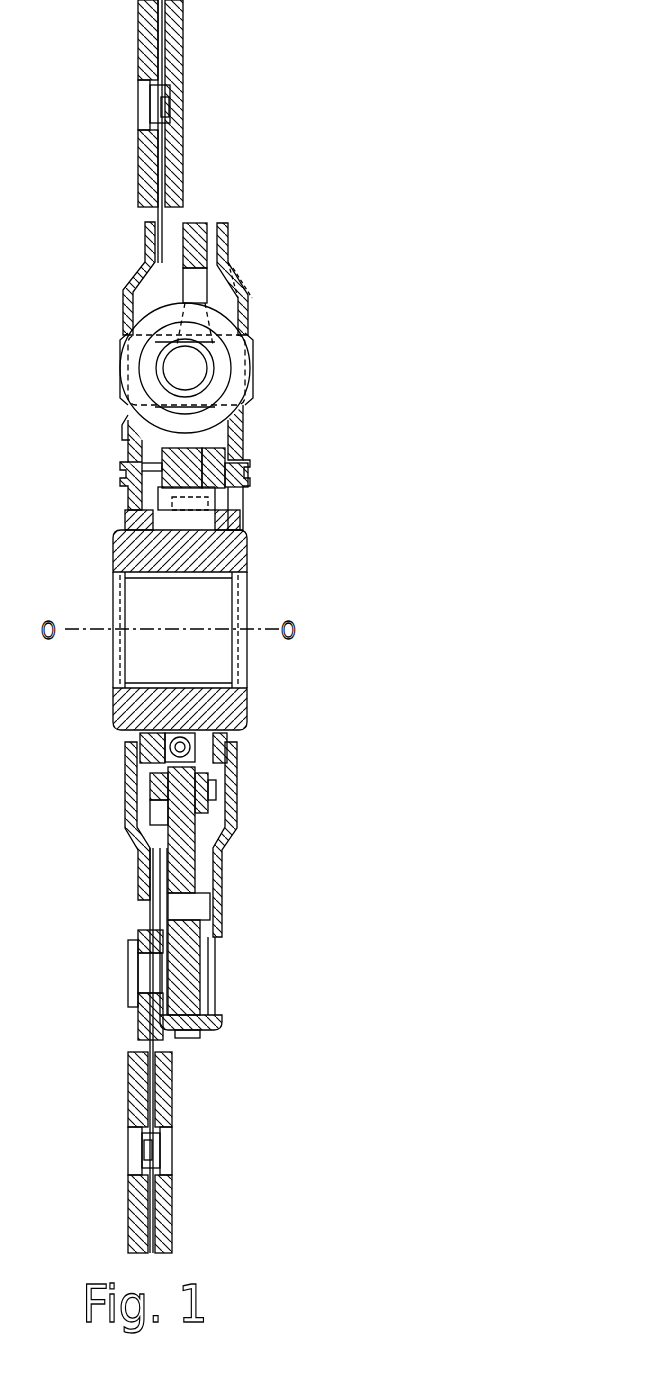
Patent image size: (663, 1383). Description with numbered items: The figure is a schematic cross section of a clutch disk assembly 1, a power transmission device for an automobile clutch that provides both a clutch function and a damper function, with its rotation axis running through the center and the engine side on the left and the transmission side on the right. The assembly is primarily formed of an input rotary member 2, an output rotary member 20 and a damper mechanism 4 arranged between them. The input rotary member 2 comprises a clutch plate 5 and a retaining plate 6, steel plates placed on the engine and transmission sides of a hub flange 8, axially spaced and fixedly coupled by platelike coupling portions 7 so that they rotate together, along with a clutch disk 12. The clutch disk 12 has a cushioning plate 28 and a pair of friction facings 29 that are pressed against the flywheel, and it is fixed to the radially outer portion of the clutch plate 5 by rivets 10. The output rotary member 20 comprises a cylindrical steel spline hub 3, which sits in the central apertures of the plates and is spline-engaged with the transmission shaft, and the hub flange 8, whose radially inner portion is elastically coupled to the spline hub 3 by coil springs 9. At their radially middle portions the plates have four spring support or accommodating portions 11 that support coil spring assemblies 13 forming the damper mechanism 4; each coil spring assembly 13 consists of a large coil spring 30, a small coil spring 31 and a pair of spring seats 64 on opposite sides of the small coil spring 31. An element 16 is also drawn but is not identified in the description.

The clutch disk assembly 1 is at (265, 120).
The input rotary member 2 is at (92, 228).
The spline hub 3 is at (265, 540).
The damper mechanism 4 is at (282, 357).
The clutch plate 5 is at (128, 826).
The retaining plate 6 is at (230, 828).
The platelike coupling portions 7 is at (217, 1040).
The hub flange 8 is at (192, 300).
The coil springs 9 is at (182, 730).
The rivets 10 is at (147, 980).
The spring support or accommodating portions 11 is at (112, 357).
The clutch disk 12 is at (188, 78).
The coil spring assemblies 13 is at (260, 338).
The flange 16 is at (250, 278).
The output rotary member 20 is at (280, 480).
The cushioning plate 28 is at (148, 1117).
The friction facings 29 is at (140, 1082).
The large coil spring 30 is at (236, 275).
The small coil spring 31 is at (222, 285).
The spring seats 64 is at (120, 380).